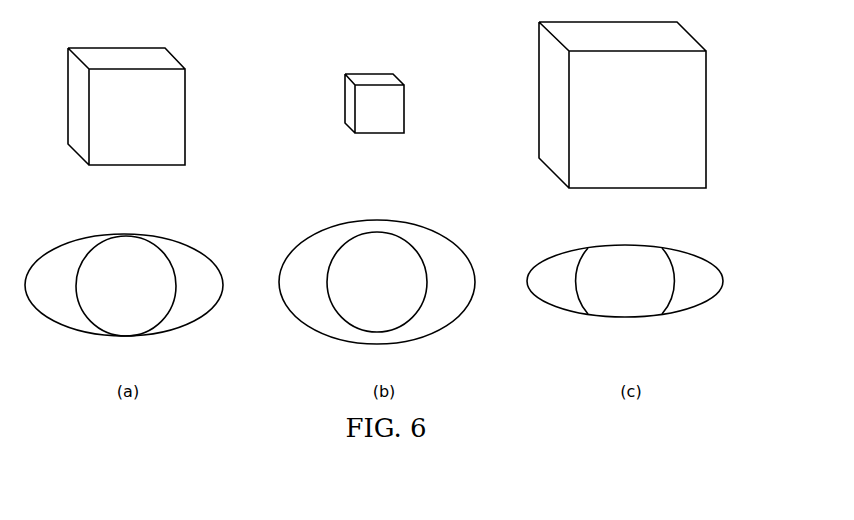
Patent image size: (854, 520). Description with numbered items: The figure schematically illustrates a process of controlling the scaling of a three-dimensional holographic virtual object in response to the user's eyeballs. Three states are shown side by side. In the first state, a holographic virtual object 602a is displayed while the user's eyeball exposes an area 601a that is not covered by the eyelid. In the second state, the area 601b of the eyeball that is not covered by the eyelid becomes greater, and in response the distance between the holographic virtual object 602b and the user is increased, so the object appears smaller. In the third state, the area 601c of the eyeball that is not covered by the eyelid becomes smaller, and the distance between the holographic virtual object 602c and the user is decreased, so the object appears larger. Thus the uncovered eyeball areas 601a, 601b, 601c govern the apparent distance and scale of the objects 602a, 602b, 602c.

The 3D holographic virtual object 602a is at (158, 102).
The 3D holographic virtual object 602b is at (412, 102).
The 3D holographic virtual object 602c is at (658, 105).
The area of the eyeball not covered by the eyelid 601a is at (192, 258).
The area of the eyeball not covered by the eyelid 601b is at (445, 248).
The area of the eyeball not covered by the eyelid 601c is at (690, 267).